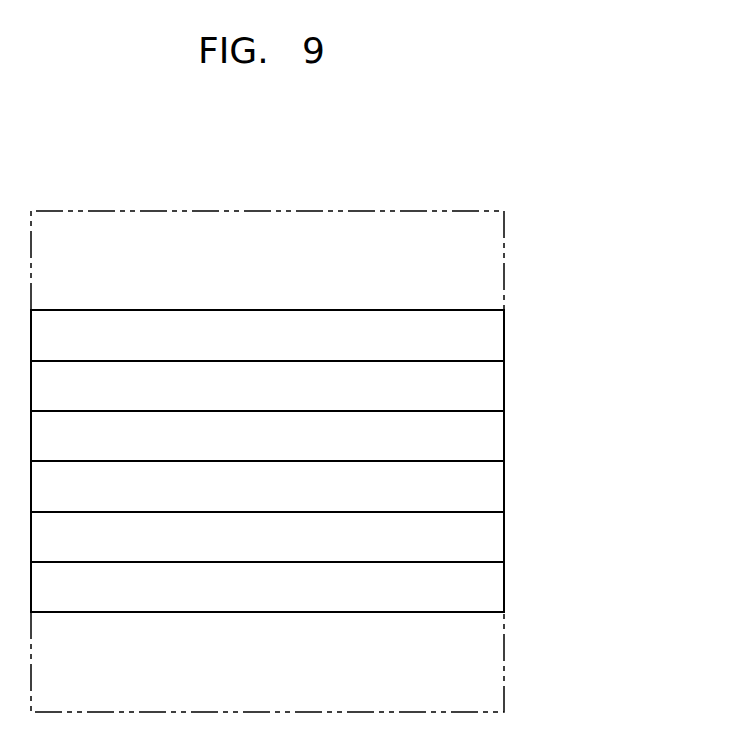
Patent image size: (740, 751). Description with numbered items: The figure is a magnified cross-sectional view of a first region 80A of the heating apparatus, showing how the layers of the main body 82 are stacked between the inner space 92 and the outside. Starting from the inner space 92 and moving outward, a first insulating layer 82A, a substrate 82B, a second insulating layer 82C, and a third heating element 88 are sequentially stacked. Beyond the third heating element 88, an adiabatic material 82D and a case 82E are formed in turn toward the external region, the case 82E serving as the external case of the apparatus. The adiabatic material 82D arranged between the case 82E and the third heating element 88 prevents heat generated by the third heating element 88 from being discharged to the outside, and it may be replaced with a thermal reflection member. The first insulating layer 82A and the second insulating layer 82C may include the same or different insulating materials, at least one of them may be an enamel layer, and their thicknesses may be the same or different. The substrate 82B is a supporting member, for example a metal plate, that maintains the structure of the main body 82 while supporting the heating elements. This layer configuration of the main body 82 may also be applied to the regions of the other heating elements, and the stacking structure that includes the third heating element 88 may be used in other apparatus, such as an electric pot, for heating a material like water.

The first region 80A is at (497, 261).
The main body 82 is at (628, 330).
The case 82E is at (499, 336).
The adiabatic material 82D is at (499, 387).
The third heating element 88 is at (499, 438).
The second insulating layer 82C is at (499, 488).
The substrate 82B is at (499, 538).
The first insulating layer 82A is at (499, 588).
The inner space 92 is at (497, 663).